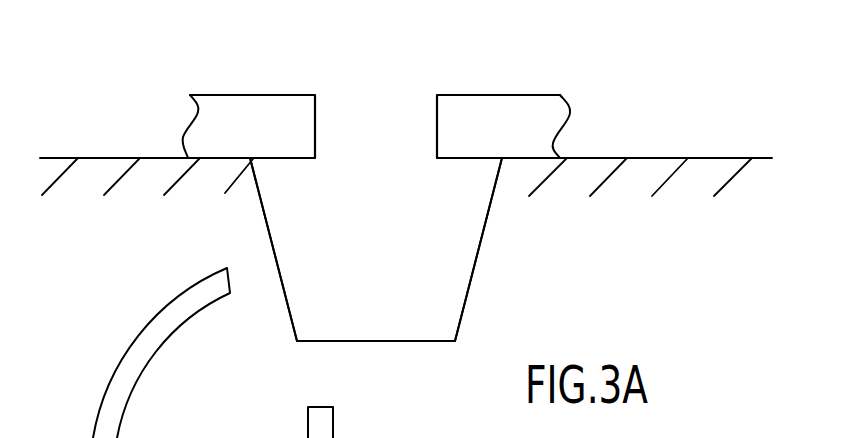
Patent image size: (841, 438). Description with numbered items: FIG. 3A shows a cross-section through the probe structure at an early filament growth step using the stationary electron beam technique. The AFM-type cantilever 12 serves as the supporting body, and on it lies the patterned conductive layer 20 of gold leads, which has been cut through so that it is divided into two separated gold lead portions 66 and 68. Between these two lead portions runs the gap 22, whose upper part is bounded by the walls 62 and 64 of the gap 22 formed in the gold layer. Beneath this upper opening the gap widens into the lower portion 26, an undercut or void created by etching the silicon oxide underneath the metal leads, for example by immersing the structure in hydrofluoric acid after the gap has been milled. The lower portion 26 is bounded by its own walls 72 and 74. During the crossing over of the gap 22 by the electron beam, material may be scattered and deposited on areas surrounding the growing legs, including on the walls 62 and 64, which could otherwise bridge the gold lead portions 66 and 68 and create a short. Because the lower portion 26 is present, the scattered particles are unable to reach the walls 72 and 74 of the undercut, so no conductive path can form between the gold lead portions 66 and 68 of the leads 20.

The AFM-type cantilever 12 is at (610, 208).
The patterned conductive layer 20 is at (608, 129).
The gap 22 is at (372, 115).
The lower portion of the gap 26 is at (370, 313).
The wall of the gap 62 is at (315, 123).
The wall of the gap 64 is at (433, 130).
The gold lead portion 66 is at (537, 113).
The gold lead portion 68 is at (217, 123).
The wall of the undercut portion 72 is at (290, 158).
The wall of the undercut portion 74 is at (470, 160).